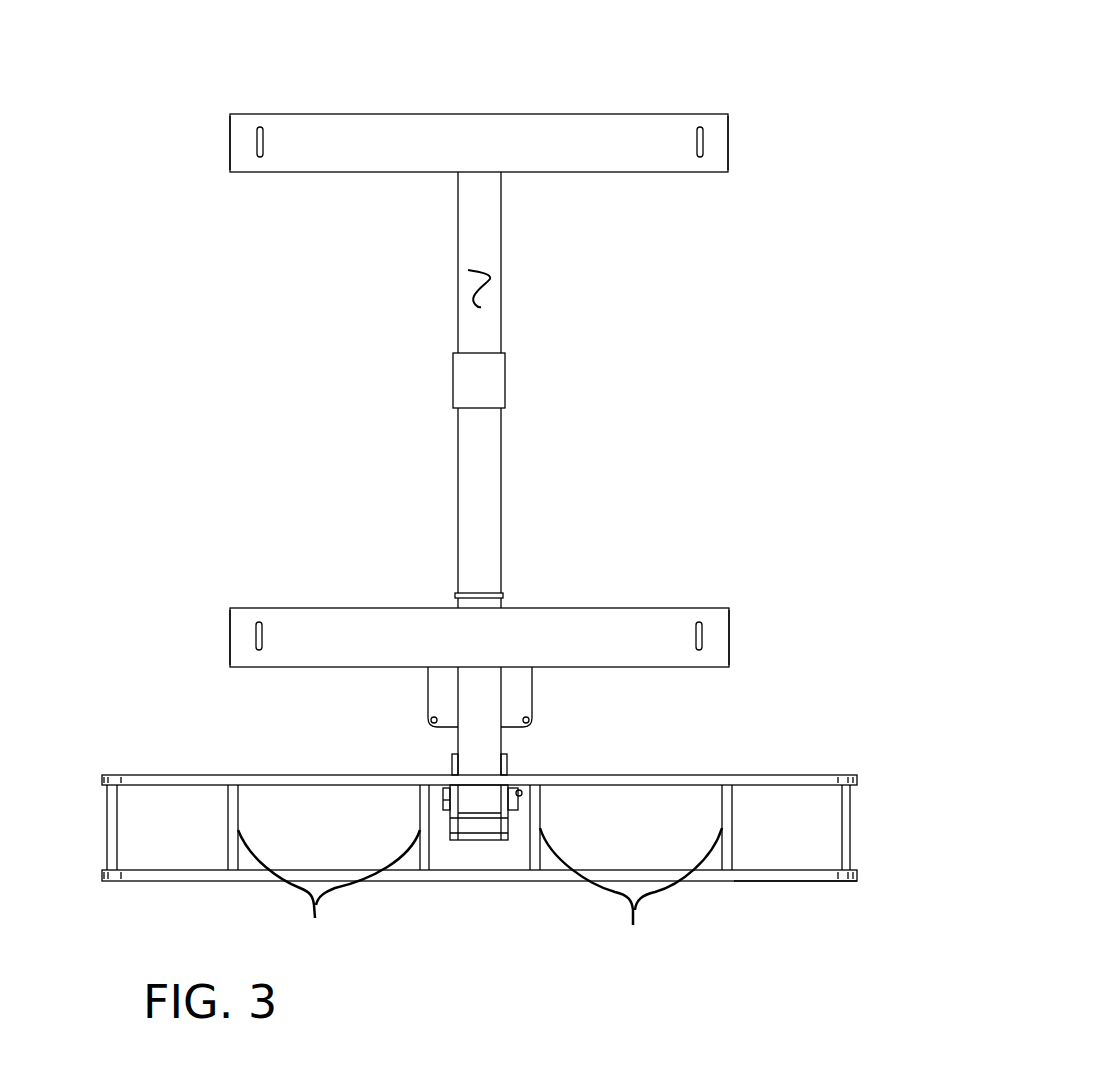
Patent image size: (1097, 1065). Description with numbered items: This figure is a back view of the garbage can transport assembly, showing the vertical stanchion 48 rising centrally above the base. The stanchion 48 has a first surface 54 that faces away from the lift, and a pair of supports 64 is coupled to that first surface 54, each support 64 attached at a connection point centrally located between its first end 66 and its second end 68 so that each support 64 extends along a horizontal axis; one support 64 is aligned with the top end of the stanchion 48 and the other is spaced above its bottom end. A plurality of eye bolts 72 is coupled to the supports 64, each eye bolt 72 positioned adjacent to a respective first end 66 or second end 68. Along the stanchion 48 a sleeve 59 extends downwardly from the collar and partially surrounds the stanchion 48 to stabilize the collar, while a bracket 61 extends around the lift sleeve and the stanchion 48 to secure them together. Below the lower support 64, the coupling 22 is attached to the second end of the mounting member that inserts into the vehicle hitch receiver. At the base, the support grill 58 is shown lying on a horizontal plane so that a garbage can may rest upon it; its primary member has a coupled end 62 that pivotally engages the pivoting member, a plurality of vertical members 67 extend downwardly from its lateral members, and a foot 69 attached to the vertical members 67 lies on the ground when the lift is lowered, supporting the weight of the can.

The coupling 22 is at (532, 695).
The stanchion 48 is at (501, 262).
The first surface 54 is at (487, 281).
The support grill 58 is at (168, 775).
The sleeve 59 is at (474, 390).
The bracket 61 is at (484, 592).
The coupled end 62 is at (105, 833).
The supports 64 is at (323, 114).
The first end 66 is at (728, 141).
The vertical members 67 is at (905, 826).
The second end 68 is at (230, 139).
The foot 69 is at (793, 882).
The eye bolts 72 is at (263, 140).